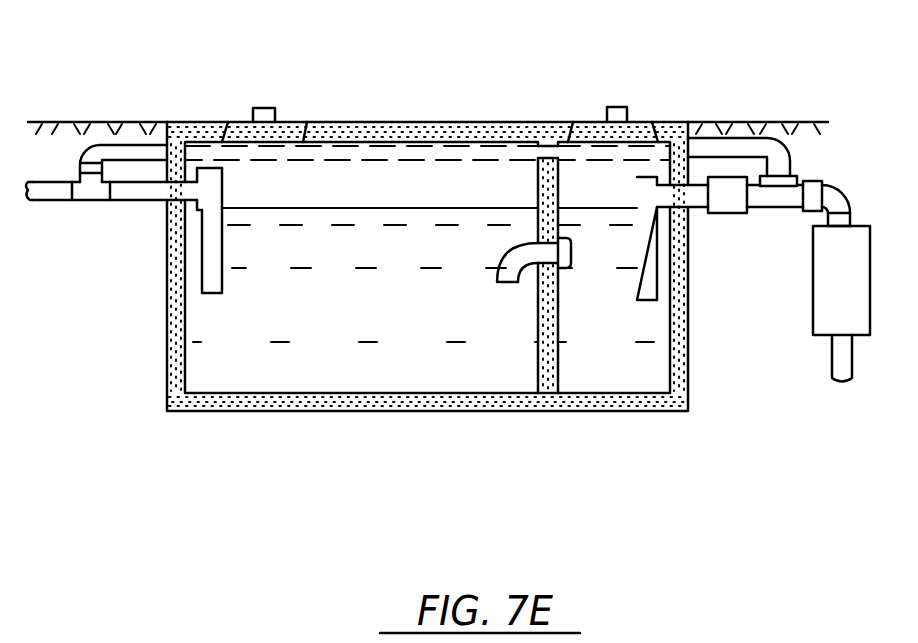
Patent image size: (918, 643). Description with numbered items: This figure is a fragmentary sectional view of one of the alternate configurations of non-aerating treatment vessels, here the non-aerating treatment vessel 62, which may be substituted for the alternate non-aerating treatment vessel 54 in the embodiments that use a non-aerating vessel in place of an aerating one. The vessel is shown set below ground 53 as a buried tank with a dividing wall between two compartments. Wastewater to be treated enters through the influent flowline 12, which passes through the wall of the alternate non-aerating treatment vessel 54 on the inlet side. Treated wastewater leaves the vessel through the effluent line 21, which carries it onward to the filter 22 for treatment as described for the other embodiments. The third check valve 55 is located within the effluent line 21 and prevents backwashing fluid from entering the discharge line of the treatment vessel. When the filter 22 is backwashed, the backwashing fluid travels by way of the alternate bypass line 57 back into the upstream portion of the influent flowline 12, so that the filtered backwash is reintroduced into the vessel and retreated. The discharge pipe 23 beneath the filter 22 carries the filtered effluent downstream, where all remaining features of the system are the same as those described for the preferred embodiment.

The ground surface 53 is at (80, 118).
The alternate bypass line 57 is at (143, 152).
The influent flowline 12 is at (159, 188).
The alternate non-aerating treatment vessel 54 is at (207, 328).
The non-aerating treatment vessel 62 is at (483, 368).
The third check valve 55 is at (728, 207).
The effluent line 21 is at (812, 190).
The filter 22 is at (830, 310).
The discharge pipe 23 is at (842, 355).